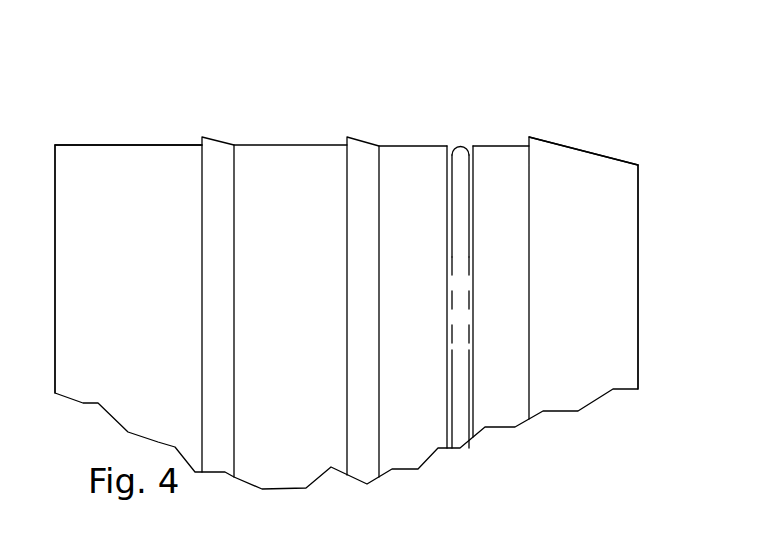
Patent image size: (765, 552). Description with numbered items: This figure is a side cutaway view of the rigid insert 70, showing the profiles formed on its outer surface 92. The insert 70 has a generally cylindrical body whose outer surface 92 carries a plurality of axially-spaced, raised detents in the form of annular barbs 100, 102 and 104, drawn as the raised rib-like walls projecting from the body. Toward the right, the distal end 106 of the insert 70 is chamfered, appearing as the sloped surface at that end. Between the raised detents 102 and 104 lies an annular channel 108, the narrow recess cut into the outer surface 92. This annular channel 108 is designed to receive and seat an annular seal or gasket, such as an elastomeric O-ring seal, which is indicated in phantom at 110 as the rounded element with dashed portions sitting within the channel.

The insert 70 is at (441, 468).
The outer surface 92 is at (90, 145).
The annular barb 100 is at (205, 138).
The annular barb 102 is at (352, 137).
The annular barb 104 is at (540, 142).
The distal end 106 is at (603, 162).
The annular channel 108 is at (457, 202).
The O-ring seal 110 is at (461, 150).